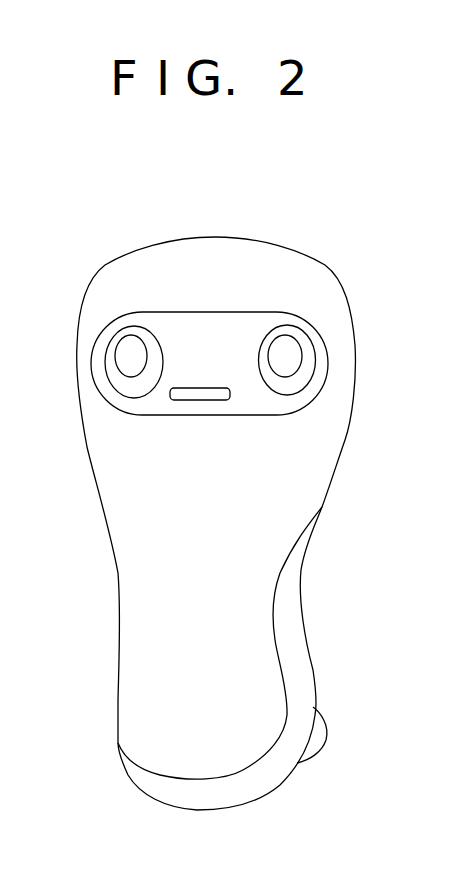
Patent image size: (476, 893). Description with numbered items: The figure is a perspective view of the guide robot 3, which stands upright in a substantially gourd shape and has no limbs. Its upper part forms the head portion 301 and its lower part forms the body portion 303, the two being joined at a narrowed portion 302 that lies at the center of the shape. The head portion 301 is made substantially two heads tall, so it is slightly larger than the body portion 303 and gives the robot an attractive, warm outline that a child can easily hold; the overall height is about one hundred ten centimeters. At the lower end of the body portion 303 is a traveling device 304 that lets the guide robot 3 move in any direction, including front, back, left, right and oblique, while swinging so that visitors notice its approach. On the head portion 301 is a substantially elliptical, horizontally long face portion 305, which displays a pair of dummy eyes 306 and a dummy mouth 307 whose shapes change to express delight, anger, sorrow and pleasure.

The guide robot 3 is at (187, 204).
The head portion 301 is at (312, 283).
The narrowed portion 302 is at (288, 603).
The body portion 303 is at (315, 660).
The traveling device 304 is at (138, 662).
The face portion 305 is at (313, 377).
The pair of dummy eyes 306 is at (273, 328).
The dummy mouth 307 is at (207, 401).